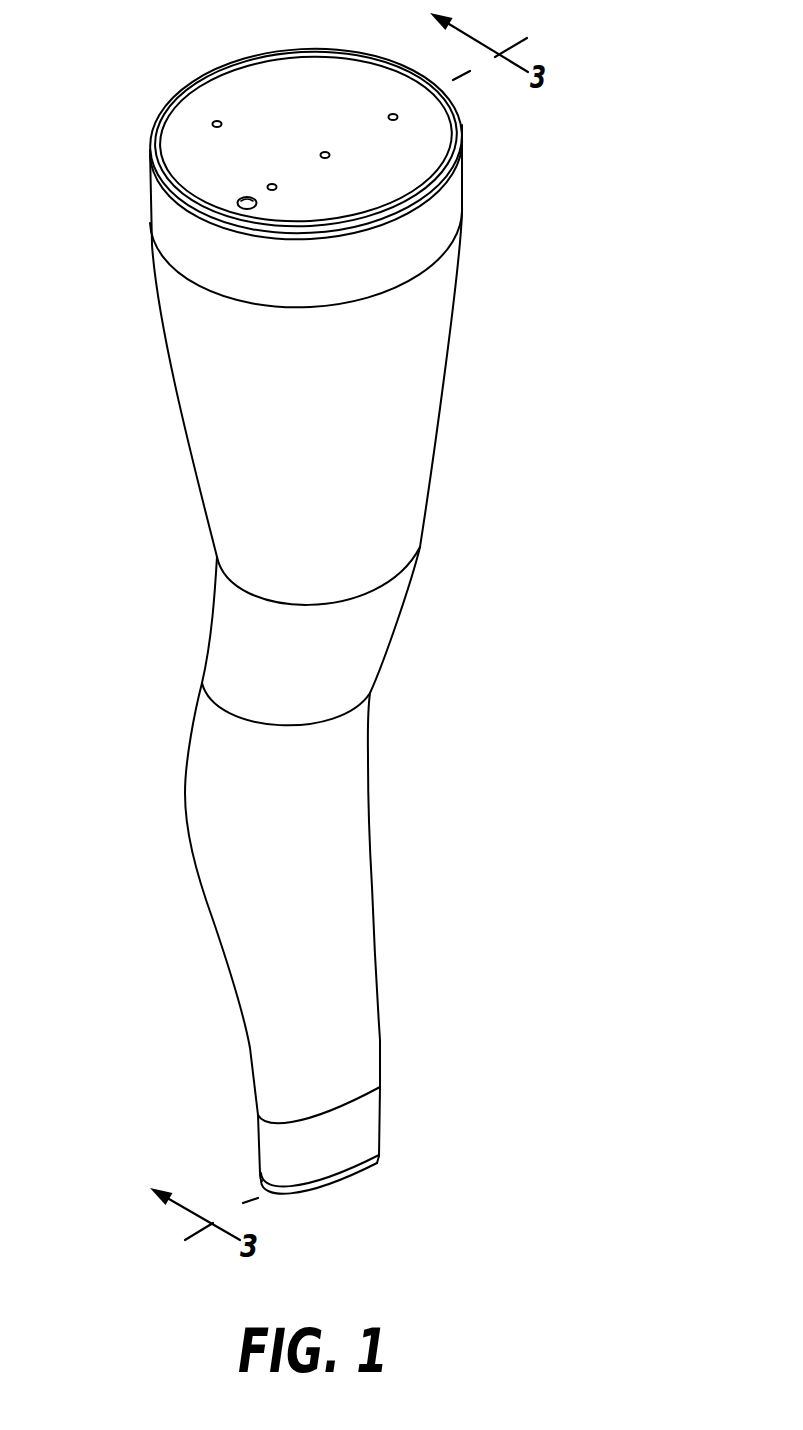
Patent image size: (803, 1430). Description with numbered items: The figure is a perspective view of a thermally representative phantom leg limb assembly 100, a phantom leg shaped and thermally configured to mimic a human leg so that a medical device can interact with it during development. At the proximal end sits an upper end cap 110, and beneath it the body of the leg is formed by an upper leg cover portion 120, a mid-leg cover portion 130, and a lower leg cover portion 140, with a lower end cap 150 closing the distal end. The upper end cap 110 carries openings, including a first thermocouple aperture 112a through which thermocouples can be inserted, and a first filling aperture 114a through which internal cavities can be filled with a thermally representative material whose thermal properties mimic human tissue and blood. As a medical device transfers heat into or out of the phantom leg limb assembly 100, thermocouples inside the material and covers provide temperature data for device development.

The thermally representative phantom leg limb assembly 100 is at (586, 213).
The upper end cap 110 is at (248, 83).
The first thermocouple aperture 112a is at (213, 122).
The first filling aperture 114a is at (240, 200).
The upper leg cover portion 120 is at (412, 395).
The mid-leg cover portion 130 is at (377, 630).
The lower leg cover portion 140 is at (352, 898).
The lower end cap 150 is at (353, 1177).